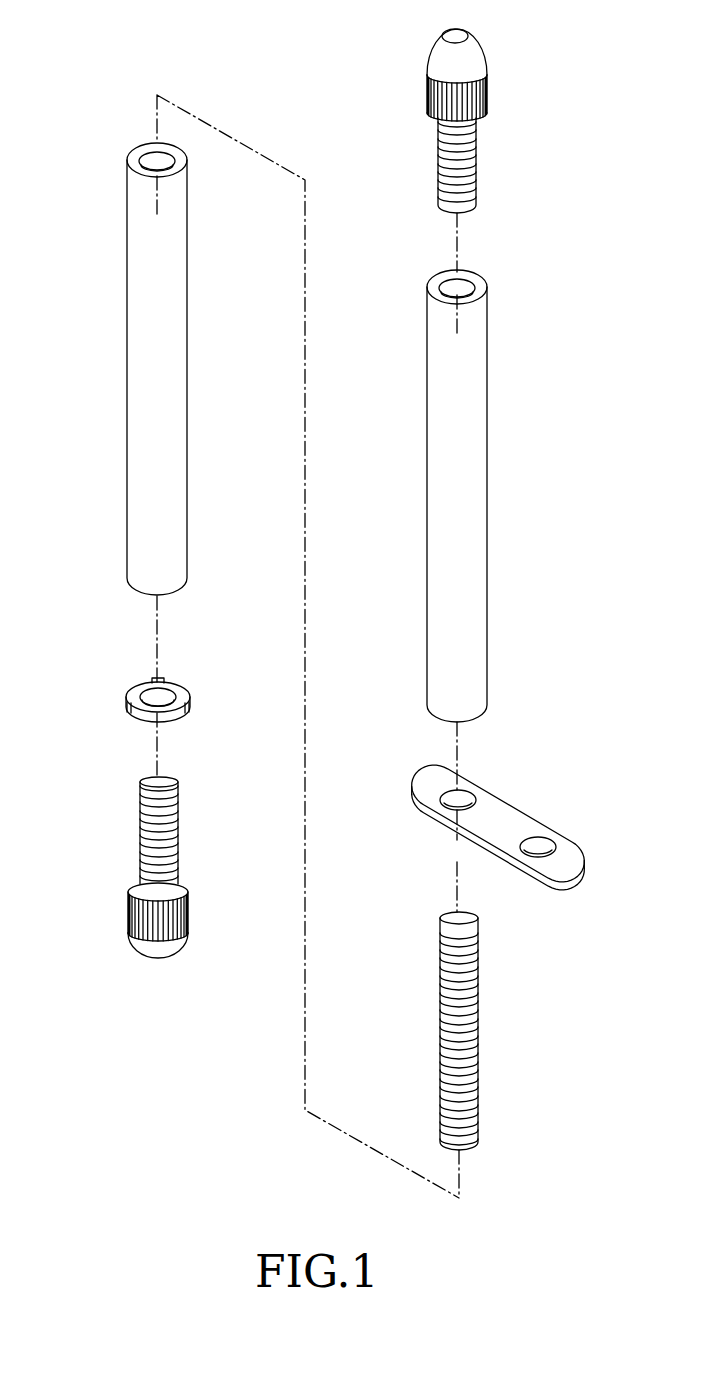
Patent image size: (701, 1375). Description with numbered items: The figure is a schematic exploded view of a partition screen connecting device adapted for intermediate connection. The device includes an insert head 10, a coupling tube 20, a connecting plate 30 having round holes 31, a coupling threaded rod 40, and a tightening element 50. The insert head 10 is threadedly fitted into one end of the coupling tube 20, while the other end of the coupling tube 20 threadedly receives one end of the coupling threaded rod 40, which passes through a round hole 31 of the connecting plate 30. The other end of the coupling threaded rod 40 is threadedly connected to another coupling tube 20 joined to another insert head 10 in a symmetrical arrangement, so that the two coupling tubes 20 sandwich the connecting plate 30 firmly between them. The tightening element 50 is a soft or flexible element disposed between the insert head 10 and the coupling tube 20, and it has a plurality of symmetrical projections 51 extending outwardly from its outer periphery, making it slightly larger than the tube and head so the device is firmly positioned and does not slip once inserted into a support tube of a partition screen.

The insert head 10 is at (478, 53).
The coupling tube 20 is at (487, 480).
The connecting plate 30 is at (514, 799).
The round hole 31 is at (465, 792).
The coupling threaded rod 40 is at (478, 1043).
The tightening element 50 is at (115, 682).
The projection 51 is at (128, 713).